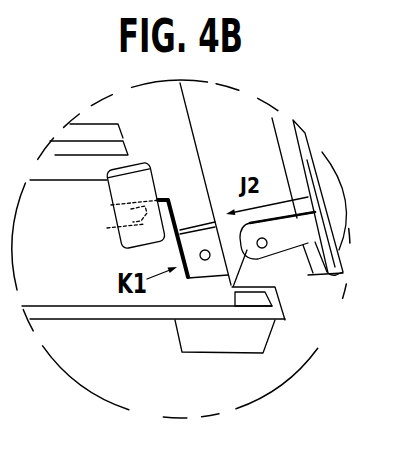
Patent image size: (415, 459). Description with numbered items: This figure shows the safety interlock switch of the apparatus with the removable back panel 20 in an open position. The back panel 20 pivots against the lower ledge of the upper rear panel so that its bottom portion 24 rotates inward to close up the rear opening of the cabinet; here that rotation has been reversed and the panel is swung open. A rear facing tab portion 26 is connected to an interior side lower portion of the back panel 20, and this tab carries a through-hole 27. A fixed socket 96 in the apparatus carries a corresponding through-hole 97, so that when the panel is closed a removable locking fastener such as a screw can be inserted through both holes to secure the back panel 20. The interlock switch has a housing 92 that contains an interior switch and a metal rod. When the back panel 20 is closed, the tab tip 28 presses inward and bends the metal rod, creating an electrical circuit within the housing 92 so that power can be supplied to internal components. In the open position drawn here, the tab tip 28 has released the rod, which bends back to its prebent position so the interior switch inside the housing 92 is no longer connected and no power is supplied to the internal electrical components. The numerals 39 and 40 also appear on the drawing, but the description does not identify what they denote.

The back panel 20 is at (307, 158).
The bottom portion 24 is at (336, 256).
The rear facing tab portion 26 is at (312, 247).
The through-hole 27 is at (266, 248).
The tab tip 28 is at (231, 285).
The lower guide rail 39 is at (81, 320).
The cutting assembly 40 is at (0, 44).
The housing 92 is at (111, 208).
The fixed socket 96 is at (147, 288).
The through-hole 97 is at (203, 260).